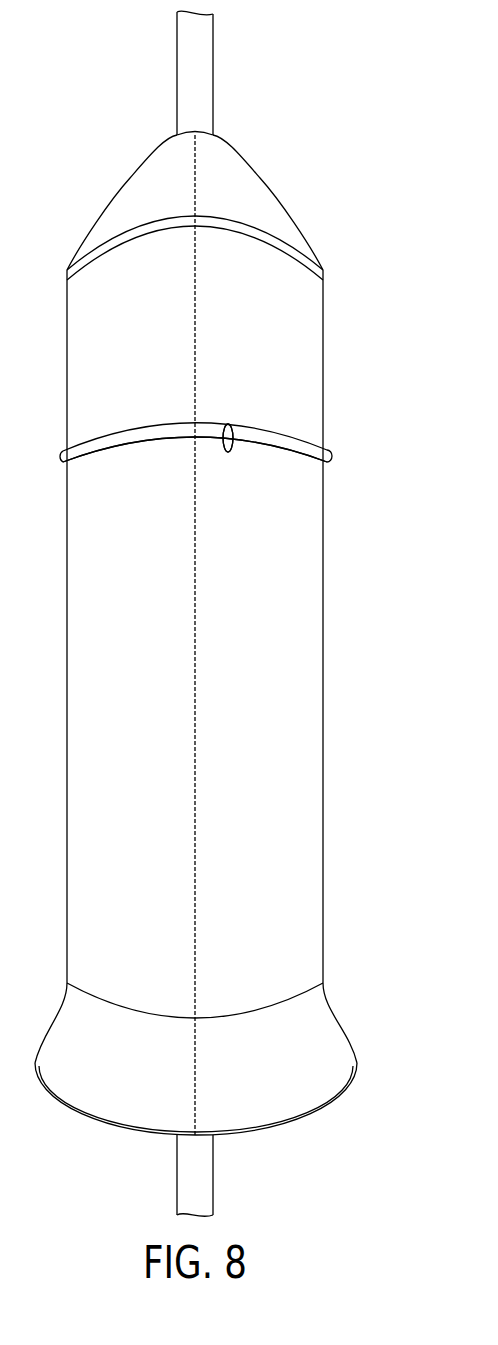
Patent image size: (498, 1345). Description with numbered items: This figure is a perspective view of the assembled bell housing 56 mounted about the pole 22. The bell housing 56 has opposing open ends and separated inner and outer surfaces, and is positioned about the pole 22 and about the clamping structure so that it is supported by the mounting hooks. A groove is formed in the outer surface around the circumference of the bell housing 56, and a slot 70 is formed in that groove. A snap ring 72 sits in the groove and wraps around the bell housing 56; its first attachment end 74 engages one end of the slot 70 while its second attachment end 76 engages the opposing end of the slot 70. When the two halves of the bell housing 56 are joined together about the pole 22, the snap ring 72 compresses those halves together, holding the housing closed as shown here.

The pole 22 is at (203, 40).
The bell housing 56 is at (324, 655).
The slot 70 is at (167, 430).
The snap ring 72 is at (235, 436).
The first attachment end 74 is at (147, 437).
The second attachment end 76 is at (233, 427).